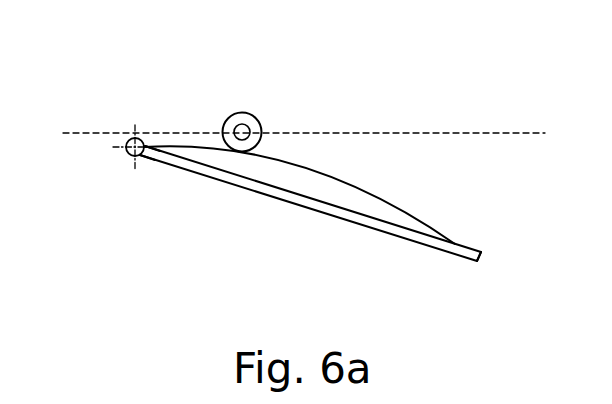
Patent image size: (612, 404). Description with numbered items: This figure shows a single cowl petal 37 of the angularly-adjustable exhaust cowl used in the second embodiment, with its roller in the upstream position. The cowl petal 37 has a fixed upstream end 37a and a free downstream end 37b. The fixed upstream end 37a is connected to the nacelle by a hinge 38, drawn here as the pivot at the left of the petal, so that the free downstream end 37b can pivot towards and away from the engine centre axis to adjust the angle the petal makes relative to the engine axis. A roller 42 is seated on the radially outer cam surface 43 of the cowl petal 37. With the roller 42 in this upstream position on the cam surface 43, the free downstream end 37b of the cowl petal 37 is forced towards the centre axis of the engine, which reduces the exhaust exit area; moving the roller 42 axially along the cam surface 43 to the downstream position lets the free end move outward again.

The cowl petal 37 is at (290, 197).
The fixed upstream end 37a is at (153, 140).
The free downstream end 37b is at (480, 258).
The hinge 38 is at (124, 152).
The roller 42 is at (242, 124).
The radially outer cam surface 43 is at (363, 190).